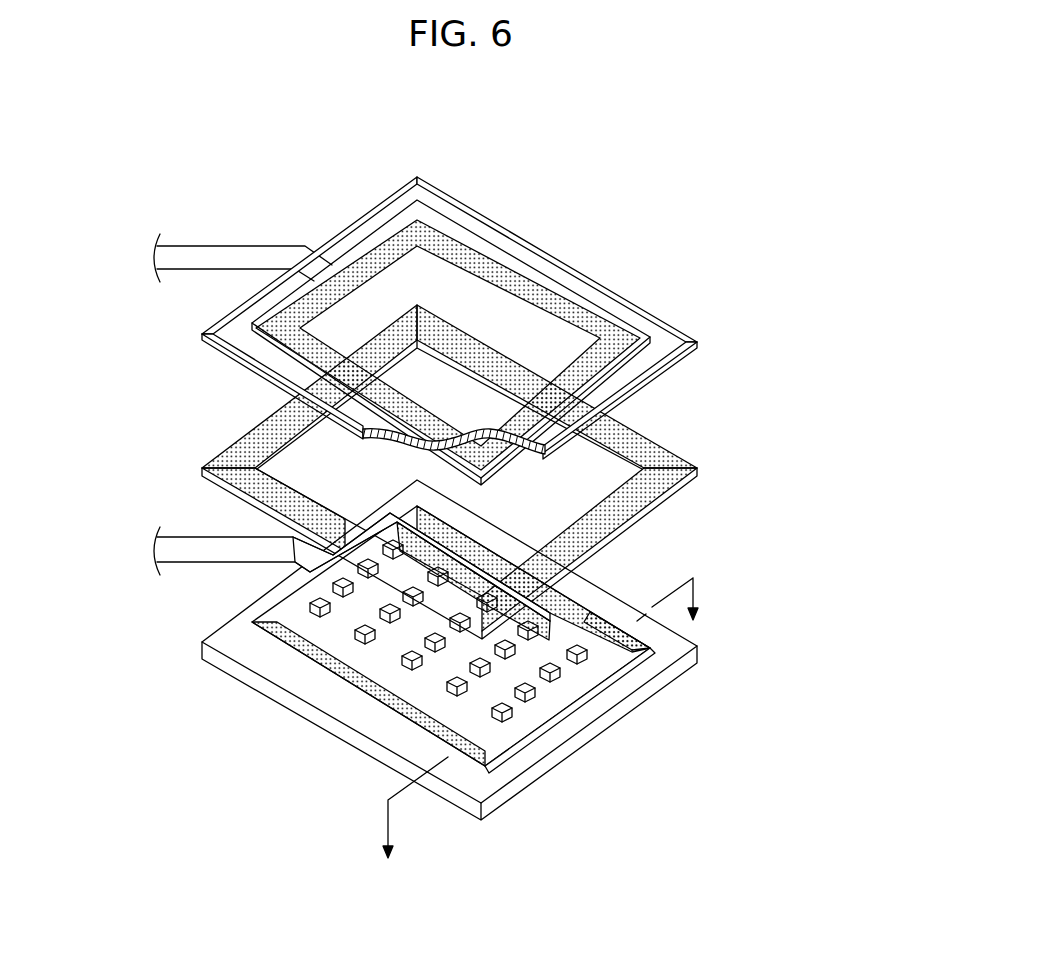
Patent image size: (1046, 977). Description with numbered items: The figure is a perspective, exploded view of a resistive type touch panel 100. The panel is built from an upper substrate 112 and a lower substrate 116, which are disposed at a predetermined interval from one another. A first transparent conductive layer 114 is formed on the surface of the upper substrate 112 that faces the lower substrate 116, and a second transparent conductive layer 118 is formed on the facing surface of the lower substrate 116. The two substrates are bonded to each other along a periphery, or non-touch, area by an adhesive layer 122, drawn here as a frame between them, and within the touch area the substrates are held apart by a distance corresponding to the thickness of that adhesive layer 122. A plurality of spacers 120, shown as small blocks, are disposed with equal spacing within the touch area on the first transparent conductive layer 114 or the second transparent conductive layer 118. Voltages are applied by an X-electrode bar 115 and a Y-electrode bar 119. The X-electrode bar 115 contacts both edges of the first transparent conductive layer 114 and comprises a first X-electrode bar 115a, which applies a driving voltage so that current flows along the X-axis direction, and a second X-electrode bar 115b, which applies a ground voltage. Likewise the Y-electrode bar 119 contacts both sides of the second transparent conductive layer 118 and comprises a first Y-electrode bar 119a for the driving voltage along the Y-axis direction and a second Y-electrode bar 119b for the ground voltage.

The resistive type touch panel 100 is at (434, 506).
The upper substrate 112 is at (443, 197).
The first transparent conductive layer 114 is at (460, 450).
The X-electrode bar 115 is at (451, 309).
The first X-electrode bar 115a is at (433, 221).
The second X-electrode bar 115b is at (614, 347).
The lower substrate 116 is at (378, 760).
The second transparent conductive layer 118 is at (547, 700).
The Y-electrode bar 119 is at (587, 746).
The first Y-electrode bar 119a is at (633, 633).
The second Y-electrode bar 119b is at (663, 826).
The spacers 120 is at (567, 598).
The adhesive layer 122 is at (662, 457).